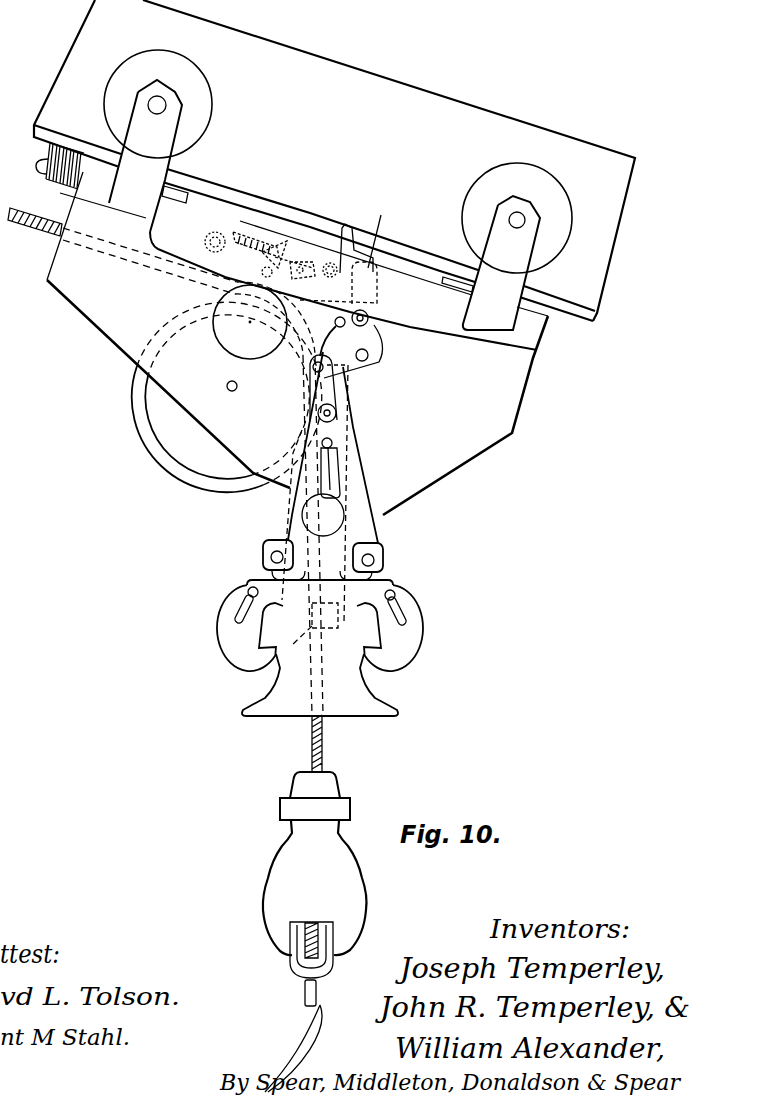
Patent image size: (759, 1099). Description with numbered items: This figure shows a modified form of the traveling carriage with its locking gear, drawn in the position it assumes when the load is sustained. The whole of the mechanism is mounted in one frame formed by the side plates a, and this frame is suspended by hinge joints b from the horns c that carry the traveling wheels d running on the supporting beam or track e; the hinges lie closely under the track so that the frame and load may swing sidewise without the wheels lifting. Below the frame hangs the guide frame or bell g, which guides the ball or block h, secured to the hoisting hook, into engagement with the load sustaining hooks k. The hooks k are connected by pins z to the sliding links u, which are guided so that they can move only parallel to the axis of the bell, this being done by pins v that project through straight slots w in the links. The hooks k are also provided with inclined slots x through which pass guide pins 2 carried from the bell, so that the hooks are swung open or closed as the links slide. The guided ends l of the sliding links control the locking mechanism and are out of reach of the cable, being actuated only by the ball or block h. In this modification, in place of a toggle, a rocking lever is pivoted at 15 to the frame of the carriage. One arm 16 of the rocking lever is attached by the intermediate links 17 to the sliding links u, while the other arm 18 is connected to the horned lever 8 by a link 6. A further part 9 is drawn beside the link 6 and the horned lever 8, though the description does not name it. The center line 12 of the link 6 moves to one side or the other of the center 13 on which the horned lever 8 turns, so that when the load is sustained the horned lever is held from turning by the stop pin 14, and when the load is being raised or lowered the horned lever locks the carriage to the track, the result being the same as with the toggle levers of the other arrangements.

The side plates a is at (165, 370).
The hinge joints b is at (117, 194).
The horns c is at (324, 205).
The traveling wheels d is at (203, 113).
The supporting beam or track e is at (334, 160).
The link 6 is at (378, 304).
The horned lever 8 is at (317, 248).
The lever 9 is at (378, 284).
The center line 12 is at (381, 215).
The center 13 is at (271, 262).
The stop pin 14 is at (336, 322).
The pivot 15 is at (368, 358).
The arm 16 is at (368, 378).
The intermediate links 17 is at (318, 395).
The arm 18 is at (369, 341).
The pins v is at (333, 443).
The straight slots w is at (332, 480).
The sliding links u is at (365, 527).
The pins z is at (272, 550).
The load sustaining hooks k is at (225, 583).
The guide pins 2 is at (248, 593).
The inclined slots x is at (238, 616).
The guided ends l is at (306, 630).
The guide frame or bell g is at (320, 648).
The ball or block h is at (315, 932).